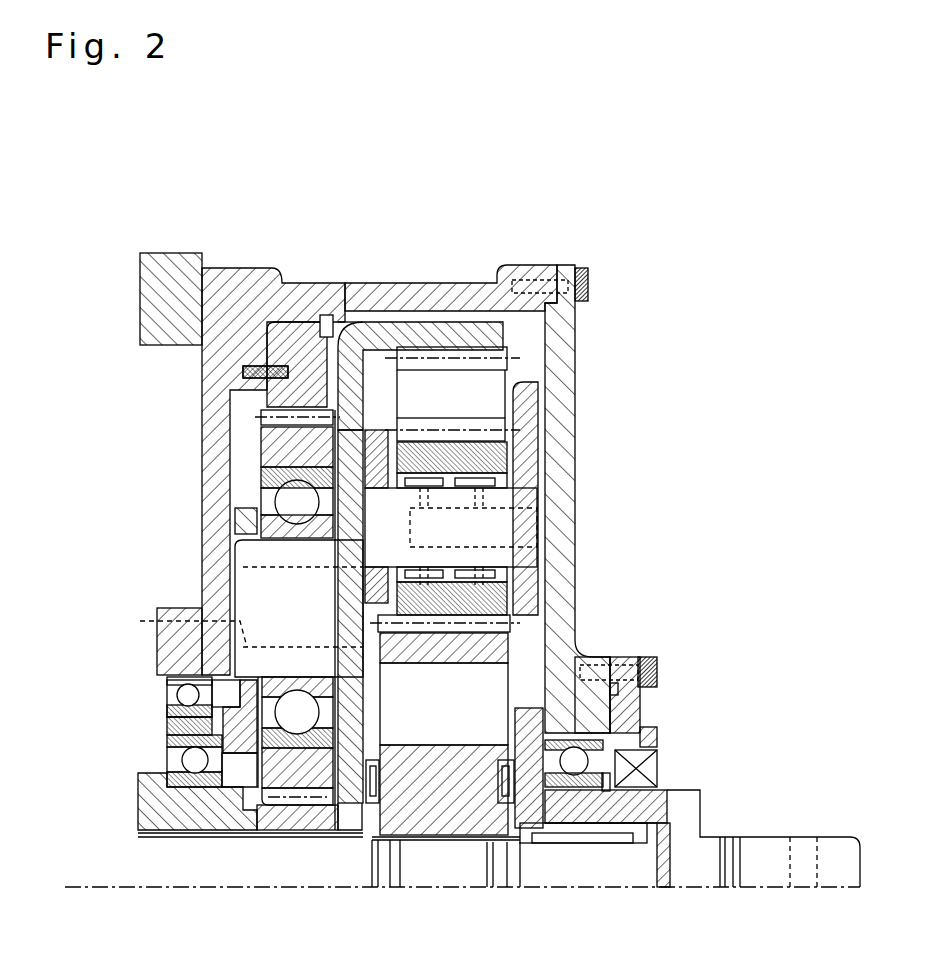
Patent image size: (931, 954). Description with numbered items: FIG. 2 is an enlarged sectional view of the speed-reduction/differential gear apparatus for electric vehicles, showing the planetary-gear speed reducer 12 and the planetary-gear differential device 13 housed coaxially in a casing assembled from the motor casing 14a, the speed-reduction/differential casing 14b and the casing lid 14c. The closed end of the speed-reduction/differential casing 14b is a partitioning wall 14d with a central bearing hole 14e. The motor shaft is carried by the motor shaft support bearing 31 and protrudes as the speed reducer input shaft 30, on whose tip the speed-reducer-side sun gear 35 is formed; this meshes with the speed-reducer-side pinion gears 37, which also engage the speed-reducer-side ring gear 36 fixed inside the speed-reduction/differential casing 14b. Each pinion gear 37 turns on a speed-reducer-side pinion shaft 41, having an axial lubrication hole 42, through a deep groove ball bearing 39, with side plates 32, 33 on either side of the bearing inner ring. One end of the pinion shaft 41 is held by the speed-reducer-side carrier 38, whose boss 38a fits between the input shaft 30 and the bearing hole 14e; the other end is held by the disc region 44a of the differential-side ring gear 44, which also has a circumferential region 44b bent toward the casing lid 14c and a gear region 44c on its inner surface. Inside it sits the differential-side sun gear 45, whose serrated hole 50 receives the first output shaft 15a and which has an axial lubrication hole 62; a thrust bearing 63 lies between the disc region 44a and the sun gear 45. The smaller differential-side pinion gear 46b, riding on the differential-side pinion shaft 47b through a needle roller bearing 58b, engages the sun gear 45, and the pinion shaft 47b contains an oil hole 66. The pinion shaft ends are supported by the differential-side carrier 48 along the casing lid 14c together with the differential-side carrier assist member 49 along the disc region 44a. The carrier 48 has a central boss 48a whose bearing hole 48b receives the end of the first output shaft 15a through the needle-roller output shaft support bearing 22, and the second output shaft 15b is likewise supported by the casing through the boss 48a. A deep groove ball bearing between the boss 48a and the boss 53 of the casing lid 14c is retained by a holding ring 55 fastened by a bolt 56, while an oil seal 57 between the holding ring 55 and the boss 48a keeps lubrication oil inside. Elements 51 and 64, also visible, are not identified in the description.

The planetary-gear speed reducer 12 is at (309, 318).
The planetary-gear differential device 13 is at (369, 312).
The motor casing 14a is at (172, 262).
The speed-reduction/differential casing 14b is at (482, 292).
The casing lid 14c is at (563, 320).
The partitioning wall 14d is at (215, 578).
The bearing hole 14e is at (173, 683).
The first output shaft 15a is at (160, 855).
The second output shaft 15b is at (782, 848).
The output shaft support bearing 22 is at (582, 840).
The speed reducer input shaft 30 is at (230, 802).
The motor shaft support bearing 31 is at (195, 760).
The side plate 32 is at (243, 530).
The side plate 33 is at (333, 540).
The speed-reducer-side sun gear 35 is at (300, 806).
The speed-reducer-side ring gear 36 is at (296, 330).
The speed-reducer-side pinion gear 37 is at (281, 443).
The speed-reducer-side carrier 38 is at (266, 488).
The boss 38a is at (177, 725).
The deep groove ball bearing 39 is at (299, 503).
The speed-reducer-side pinion shaft 41 is at (245, 603).
The lubrication hole 42 is at (176, 627).
The differential-side ring gear 44 is at (512, 337).
The disc region 44a is at (363, 690).
The circumferential region 44b is at (433, 327).
The gear region 44c is at (482, 362).
The differential-side sun gear 45 is at (505, 648).
The differential-side pinion gear 46b is at (468, 455).
The differential-side pinion shaft 47b is at (525, 525).
The differential-side carrier 48 is at (528, 453).
The boss 48a is at (668, 802).
The bearing hole 48b is at (623, 828).
The differential-side carrier assist member 49 is at (375, 455).
The serrated hole 50 is at (447, 840).
The bearing inner race 51 is at (558, 786).
The boss 53 is at (592, 658).
The holding ring 55 is at (625, 660).
The bolt 56 is at (657, 673).
The oil seal 57 is at (637, 766).
The needle roller bearing 58b is at (478, 557).
The axial lubrication hole 62 is at (480, 687).
The thrust bearing 63 is at (378, 766).
The seal 64 is at (500, 766).
The oil hole 66 is at (510, 497).